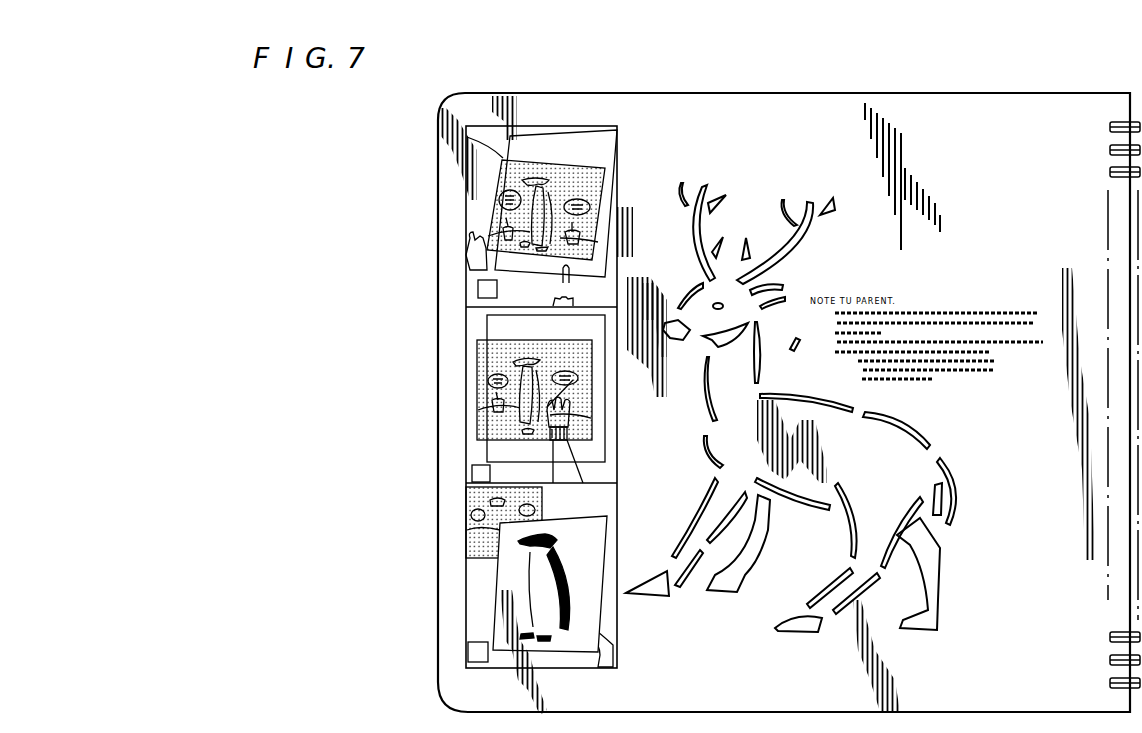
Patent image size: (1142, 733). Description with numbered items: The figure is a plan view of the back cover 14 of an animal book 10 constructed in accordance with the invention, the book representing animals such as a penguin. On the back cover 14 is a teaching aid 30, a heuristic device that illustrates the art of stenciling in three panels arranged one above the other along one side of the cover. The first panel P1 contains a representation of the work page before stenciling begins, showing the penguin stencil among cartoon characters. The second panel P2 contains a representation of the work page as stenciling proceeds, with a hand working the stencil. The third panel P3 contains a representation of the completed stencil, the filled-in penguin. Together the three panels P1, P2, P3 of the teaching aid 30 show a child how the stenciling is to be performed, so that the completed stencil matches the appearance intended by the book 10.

The book 10 is at (428, 267).
The back cover 14 is at (1038, 85).
The teaching aid 30 is at (567, 391).
The first panel P1 is at (602, 172).
The second panel P2 is at (586, 360).
The third panel P3 is at (593, 527).